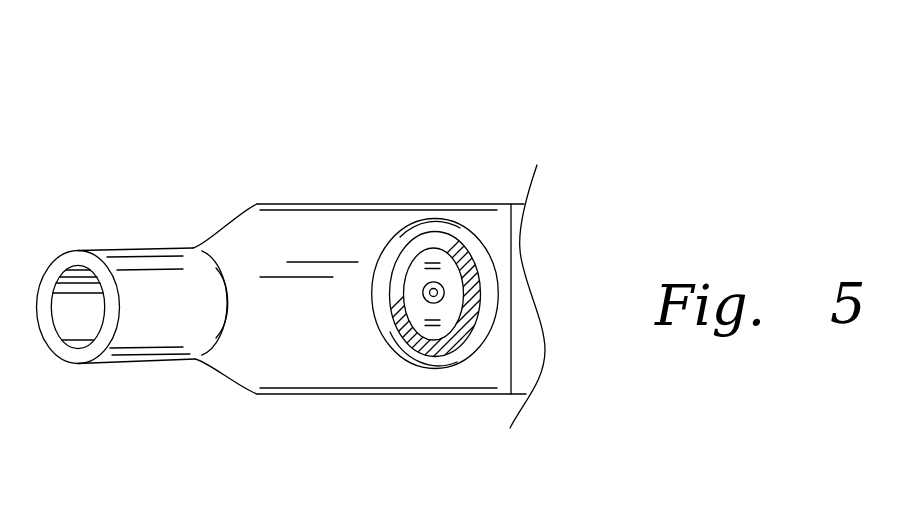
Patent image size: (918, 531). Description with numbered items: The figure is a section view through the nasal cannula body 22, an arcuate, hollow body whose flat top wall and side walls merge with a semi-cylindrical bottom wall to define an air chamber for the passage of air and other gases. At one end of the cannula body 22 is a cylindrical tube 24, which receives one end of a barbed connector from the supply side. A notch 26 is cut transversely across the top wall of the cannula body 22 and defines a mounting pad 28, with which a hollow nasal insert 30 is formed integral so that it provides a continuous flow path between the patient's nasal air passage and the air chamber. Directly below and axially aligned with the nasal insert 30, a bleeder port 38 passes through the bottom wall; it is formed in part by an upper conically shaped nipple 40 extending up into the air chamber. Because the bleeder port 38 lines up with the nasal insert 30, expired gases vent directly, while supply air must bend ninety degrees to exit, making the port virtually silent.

The nasal cannula body 22 is at (492, 163).
The cylindrical tube 24 is at (160, 247).
The notch 26 is at (523, 360).
The mounting pad 28 is at (317, 230).
The nasal insert 30 is at (403, 257).
The bleeder port 38 is at (423, 298).
The upper conically shaped nipple 40 is at (442, 300).